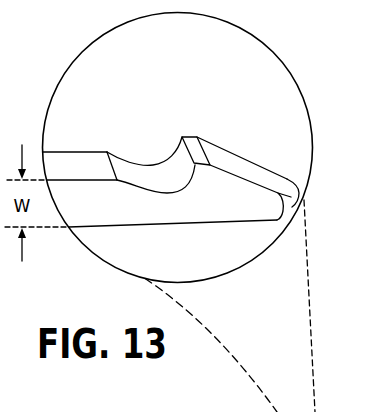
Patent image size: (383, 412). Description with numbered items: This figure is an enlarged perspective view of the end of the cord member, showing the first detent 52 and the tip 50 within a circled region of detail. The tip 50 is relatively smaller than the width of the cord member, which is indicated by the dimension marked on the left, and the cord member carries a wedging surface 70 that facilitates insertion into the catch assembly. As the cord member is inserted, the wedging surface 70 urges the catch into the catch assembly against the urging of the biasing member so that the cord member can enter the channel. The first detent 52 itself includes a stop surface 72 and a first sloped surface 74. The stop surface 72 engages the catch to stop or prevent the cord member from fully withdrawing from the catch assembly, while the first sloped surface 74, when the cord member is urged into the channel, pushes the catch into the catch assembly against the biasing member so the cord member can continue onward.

The tip 50 is at (303, 200).
The first detent 52 is at (153, 120).
The wedging surface 70 is at (241, 165).
The stop surface 72 is at (172, 139).
The first sloped surface 74 is at (130, 167).